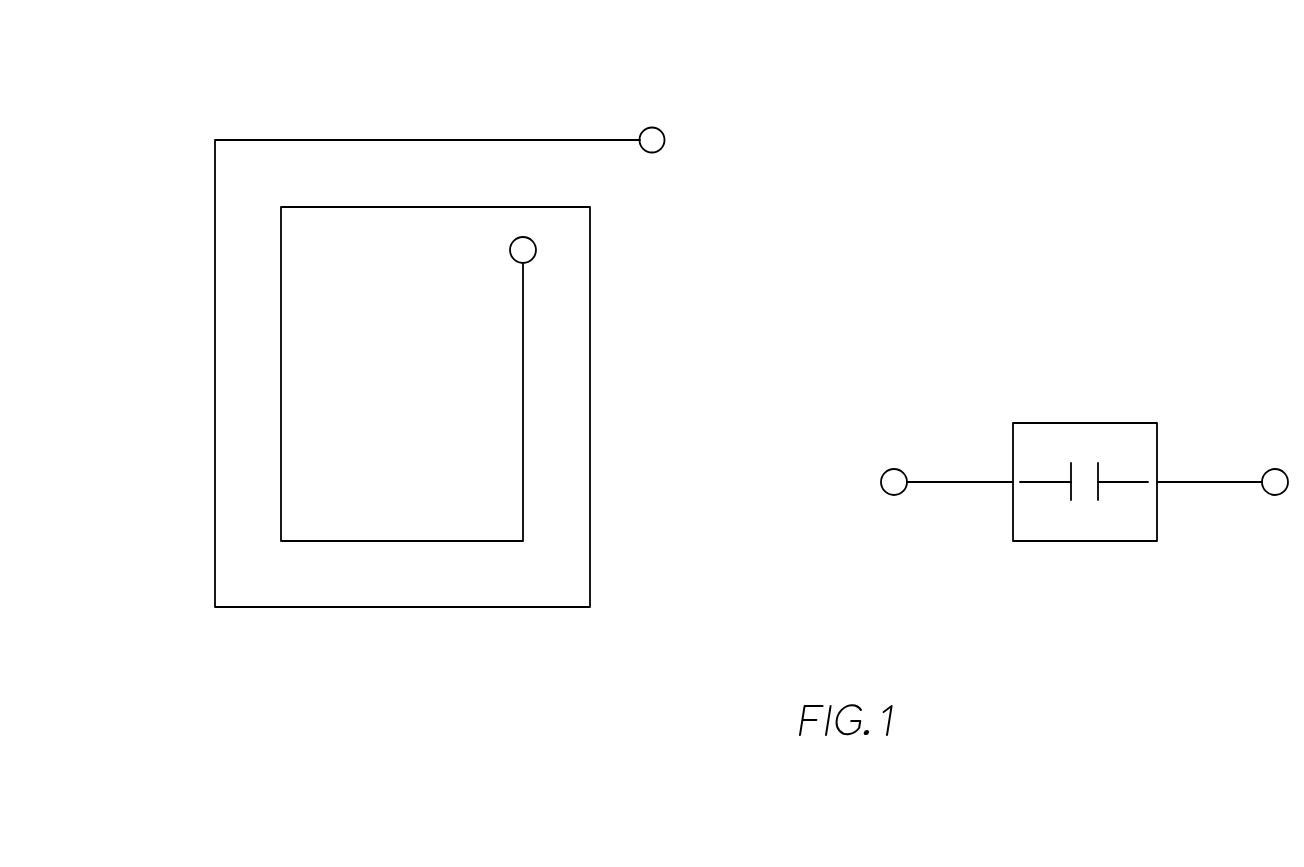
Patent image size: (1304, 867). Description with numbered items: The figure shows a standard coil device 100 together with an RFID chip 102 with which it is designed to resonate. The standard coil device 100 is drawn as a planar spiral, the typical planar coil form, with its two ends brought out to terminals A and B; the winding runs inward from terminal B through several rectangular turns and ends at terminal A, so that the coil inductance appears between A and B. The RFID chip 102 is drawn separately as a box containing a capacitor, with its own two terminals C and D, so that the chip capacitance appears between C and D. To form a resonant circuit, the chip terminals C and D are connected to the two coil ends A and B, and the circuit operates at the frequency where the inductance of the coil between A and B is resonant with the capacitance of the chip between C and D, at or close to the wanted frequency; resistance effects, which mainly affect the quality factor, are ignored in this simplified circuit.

The standard coil device 100 is at (460, 306).
The RFID chip 102 is at (1084, 422).
The coil end A is at (514, 250).
The coil end B is at (663, 141).
The RFID chip terminal C is at (894, 499).
The RFID chip terminal D is at (1275, 499).